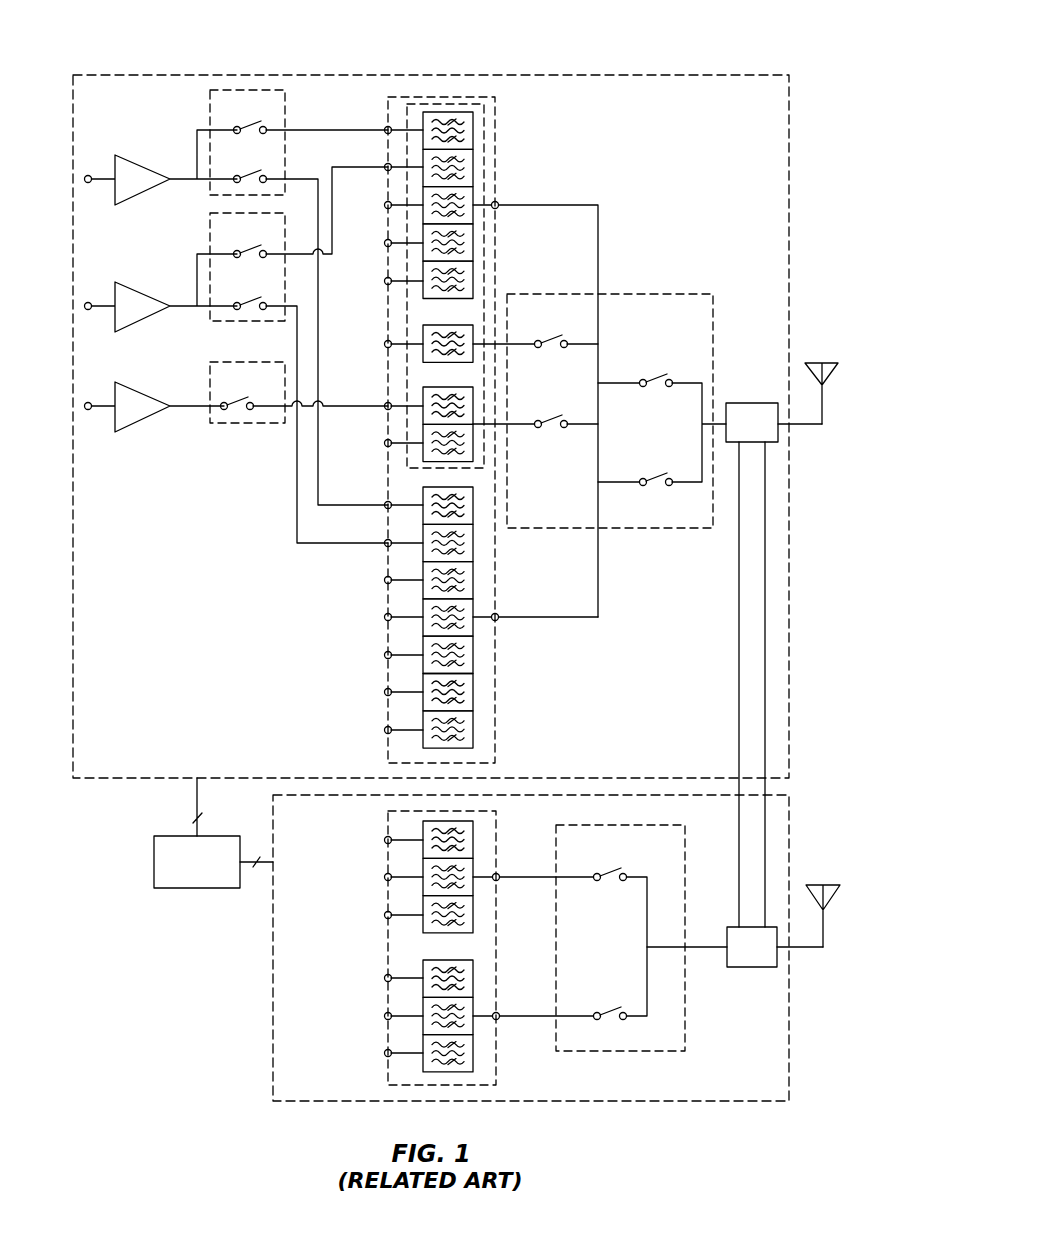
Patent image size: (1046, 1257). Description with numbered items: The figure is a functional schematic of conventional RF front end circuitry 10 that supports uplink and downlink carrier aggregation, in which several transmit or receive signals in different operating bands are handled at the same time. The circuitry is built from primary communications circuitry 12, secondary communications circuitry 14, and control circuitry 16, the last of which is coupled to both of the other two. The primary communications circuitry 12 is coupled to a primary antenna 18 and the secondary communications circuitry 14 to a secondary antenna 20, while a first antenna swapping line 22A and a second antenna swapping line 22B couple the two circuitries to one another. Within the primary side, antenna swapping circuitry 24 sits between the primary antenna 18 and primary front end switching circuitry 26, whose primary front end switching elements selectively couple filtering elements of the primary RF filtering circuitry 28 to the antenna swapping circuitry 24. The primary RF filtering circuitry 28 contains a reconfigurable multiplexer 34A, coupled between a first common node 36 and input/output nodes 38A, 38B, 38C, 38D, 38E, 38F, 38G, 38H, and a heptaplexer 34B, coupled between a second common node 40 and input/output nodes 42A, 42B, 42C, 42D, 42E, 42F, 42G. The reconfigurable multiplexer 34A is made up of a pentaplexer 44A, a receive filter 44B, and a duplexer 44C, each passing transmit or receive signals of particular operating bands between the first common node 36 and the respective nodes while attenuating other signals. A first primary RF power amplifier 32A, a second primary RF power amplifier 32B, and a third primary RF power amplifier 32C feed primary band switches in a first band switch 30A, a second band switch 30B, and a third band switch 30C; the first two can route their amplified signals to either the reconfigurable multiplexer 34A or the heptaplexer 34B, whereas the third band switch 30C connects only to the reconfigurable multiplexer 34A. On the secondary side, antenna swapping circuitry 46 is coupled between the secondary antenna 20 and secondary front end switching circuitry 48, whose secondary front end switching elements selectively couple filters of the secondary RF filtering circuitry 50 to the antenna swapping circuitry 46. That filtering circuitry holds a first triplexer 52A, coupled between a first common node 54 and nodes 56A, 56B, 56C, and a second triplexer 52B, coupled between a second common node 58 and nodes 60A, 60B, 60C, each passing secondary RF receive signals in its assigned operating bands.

The conventional RF front end circuitry 10 is at (722, 54).
The primary communications circuitry 12 is at (104, 750).
The secondary communications circuitry 14 is at (776, 1094).
The control circuitry 16 is at (188, 885).
The primary antenna 18 is at (815, 362).
The secondary antenna 20 is at (816, 884).
The first antenna swapping line 22A is at (737, 666).
The second antenna swapping line 22B is at (767, 668).
The antenna swapping circuitry 24 is at (743, 433).
The primary front end switching circuitry 26 is at (703, 524).
The primary RF filtering circuitry 28 is at (496, 731).
The first band switch 30A is at (210, 108).
The second band switch 30B is at (210, 232).
The third band switch 30C is at (210, 382).
The first primary RF power amplifier 32A is at (122, 188).
The second primary RF power amplifier 32B is at (122, 315).
The third primary RF power amplifier 32C is at (122, 415).
The reconfigurable multiplexer 34A is at (481, 286).
The heptaplexer 34B is at (474, 694).
The first common node 36 is at (498, 203).
The first one of the first set of input/output nodes 38A is at (385, 128).
The second one of the first set of input/output nodes 38B is at (385, 165).
The third one of the first set of input/output nodes 38C is at (385, 203).
The fourth one of the first set of input/output nodes 38D is at (385, 241).
The fifth one of the first set of input/output nodes 38E is at (385, 279).
The sixth one of the first set of input/output nodes 38F is at (385, 342).
The seventh one of the first set of input/output nodes 38G is at (385, 404).
The eighth one of the first set of input/output nodes 38H is at (385, 441).
The second common node 40 is at (498, 615).
The first one of the second set of input/output nodes 42A is at (385, 503).
The second one of the second set of input/output nodes 42B is at (385, 541).
The third one of the second set of input/output nodes 42C is at (385, 578).
The fourth one of the second set of input/output nodes 42D is at (385, 615).
The fifth one of the second set of input/output nodes 42E is at (385, 653).
The sixth one of the second set of input/output nodes 42F is at (385, 690).
The seventh one of the second set of input/output nodes 42G is at (385, 728).
The pentaplexer 44A is at (474, 251).
The receive filter 44B is at (474, 350).
The duplexer 44C is at (474, 437).
The antenna swapping circuitry 46 is at (743, 956).
The secondary front end switching circuitry 48 is at (656, 1047).
The secondary RF filtering circuitry 50 is at (497, 829).
The first triplexer 52A is at (445, 934).
The second triplexer 52B is at (450, 960).
The first common node 54 is at (499, 874).
The first one of the first set of input/output nodes 56A is at (385, 838).
The second one of the first set of input/output nodes 56B is at (385, 875).
The third one of the first set of input/output nodes 56C is at (385, 913).
The second common node 58 is at (499, 1013).
The first one of the second set of input/output nodes 60A is at (385, 976).
The second one of the second set of input/output nodes 60B is at (385, 1014).
The third one of the second set of input/output nodes 60C is at (385, 1051).